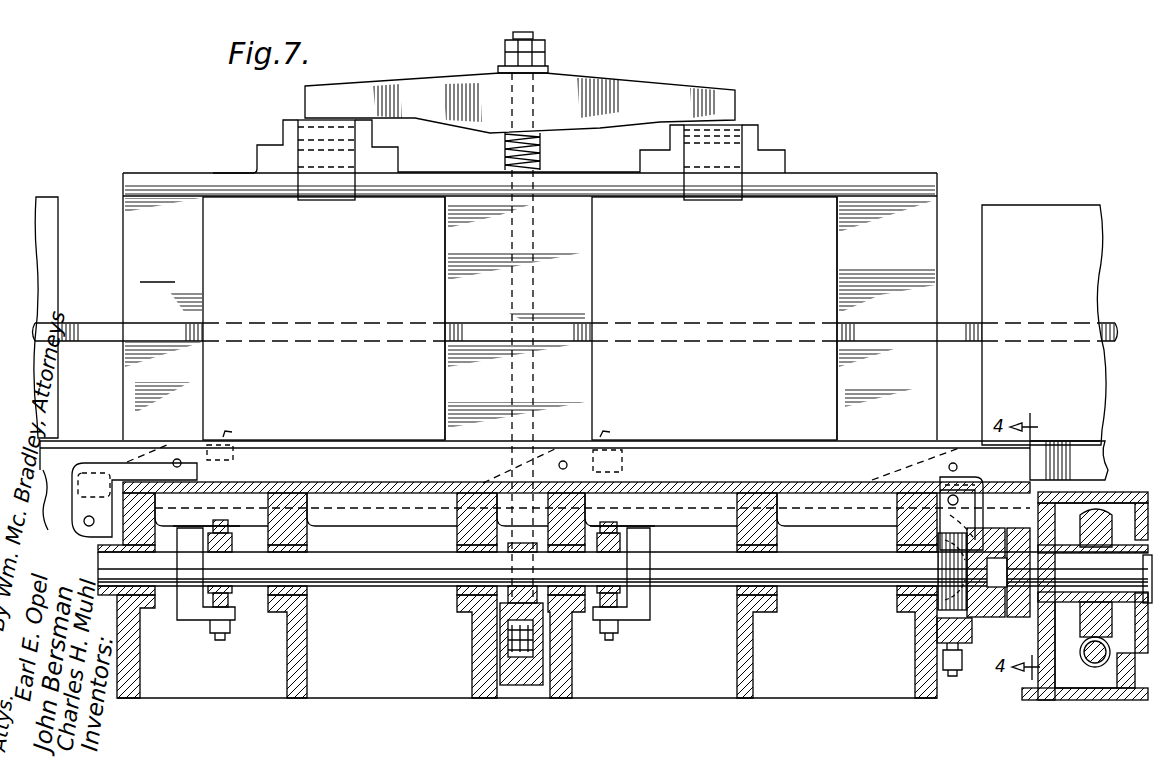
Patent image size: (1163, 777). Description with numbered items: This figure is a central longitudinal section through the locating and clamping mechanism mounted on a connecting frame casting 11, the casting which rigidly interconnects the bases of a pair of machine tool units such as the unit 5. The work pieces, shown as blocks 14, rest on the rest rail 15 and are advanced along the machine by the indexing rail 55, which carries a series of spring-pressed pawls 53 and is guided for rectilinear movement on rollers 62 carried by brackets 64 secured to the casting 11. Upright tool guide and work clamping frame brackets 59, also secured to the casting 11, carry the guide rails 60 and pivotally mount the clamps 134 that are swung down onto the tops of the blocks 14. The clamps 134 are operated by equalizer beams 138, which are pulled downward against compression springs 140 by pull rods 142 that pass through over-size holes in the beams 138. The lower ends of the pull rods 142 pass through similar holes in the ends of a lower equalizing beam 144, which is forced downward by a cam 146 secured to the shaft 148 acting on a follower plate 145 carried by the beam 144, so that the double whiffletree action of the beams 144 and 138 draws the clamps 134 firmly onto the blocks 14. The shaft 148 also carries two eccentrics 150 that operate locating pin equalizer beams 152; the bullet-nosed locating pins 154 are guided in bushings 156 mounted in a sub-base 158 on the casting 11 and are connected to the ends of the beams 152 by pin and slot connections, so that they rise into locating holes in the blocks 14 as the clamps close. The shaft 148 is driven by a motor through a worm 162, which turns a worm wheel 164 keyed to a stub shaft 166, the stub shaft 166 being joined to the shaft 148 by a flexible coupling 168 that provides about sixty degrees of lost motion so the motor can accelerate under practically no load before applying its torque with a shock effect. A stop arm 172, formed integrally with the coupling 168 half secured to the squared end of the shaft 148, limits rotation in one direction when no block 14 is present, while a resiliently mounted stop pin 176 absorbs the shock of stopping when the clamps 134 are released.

The machine tool unit 5 is at (855, 190).
The connecting frame casting 11 is at (163, 688).
The block 14 is at (58, 402).
The rest rail 15 is at (1108, 457).
The pawl 53 is at (197, 438).
The indexing rail 55 is at (570, 485).
The tool guide and work clamping frame bracket 59 is at (157, 272).
The guide rail 60 is at (153, 328).
The roller 62 is at (527, 514).
The bracket 64 is at (543, 494).
The clamp 134 is at (326, 197).
The equalizer beam 138 is at (588, 88).
The spring 140 is at (542, 152).
The pull rod 142 is at (535, 32).
The lower equalizing beam 144 is at (500, 672).
The follower plate 145 is at (505, 610).
The cam 146 is at (507, 598).
The shaft 148 is at (375, 588).
The eccentric 150 is at (228, 539).
The locating pin equalizer beam 152 is at (238, 600).
The locating pin 154 is at (228, 436).
The bushing 156 is at (625, 470).
The sub-base 158 is at (572, 673).
The worm 162 is at (1097, 665).
The worm wheel 164 is at (1080, 622).
The stub shaft 166 is at (1053, 582).
The flexible coupling 168 is at (993, 618).
The stop arm 172 is at (952, 582).
The stop pin 176 is at (950, 660).